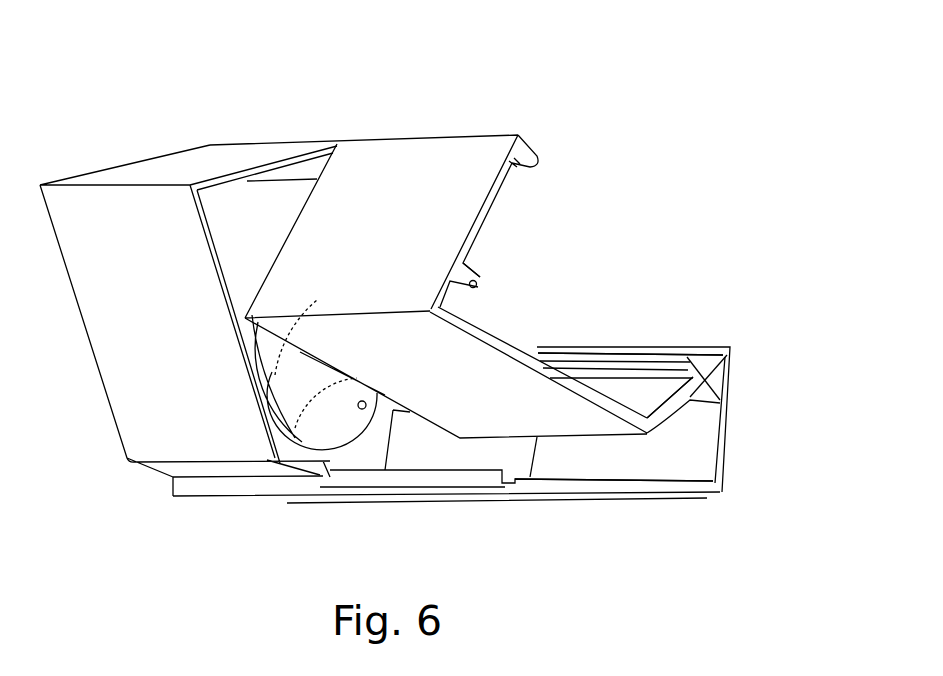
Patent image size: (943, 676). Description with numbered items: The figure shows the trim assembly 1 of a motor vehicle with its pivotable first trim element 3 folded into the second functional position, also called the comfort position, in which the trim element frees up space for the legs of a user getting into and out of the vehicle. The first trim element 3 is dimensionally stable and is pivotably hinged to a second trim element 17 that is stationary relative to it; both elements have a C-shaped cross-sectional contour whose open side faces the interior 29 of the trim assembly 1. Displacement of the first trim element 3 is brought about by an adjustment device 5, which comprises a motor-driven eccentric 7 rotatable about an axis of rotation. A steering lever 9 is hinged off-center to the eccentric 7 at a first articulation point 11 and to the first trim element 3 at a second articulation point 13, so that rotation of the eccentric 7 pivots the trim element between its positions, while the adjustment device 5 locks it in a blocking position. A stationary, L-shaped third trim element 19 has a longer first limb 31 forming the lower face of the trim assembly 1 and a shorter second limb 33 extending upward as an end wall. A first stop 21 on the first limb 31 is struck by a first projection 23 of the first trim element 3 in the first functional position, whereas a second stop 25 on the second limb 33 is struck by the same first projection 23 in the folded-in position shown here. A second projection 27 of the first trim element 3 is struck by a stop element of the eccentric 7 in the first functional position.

The trim assembly 1 is at (522, 125).
The first trim element 3 is at (488, 220).
The adjustment device 5 is at (537, 161).
The eccentric 7 is at (273, 370).
The steering lever 9 is at (357, 380).
The first articulation point 11 is at (373, 412).
The second articulation point 13 is at (480, 280).
The second trim element 17 is at (247, 172).
The third trim element 19 is at (728, 335).
The first stop 21 is at (523, 485).
The first projection 23 is at (683, 403).
The second stop 25 is at (710, 400).
The second projection 27 is at (690, 347).
The interior 29 is at (643, 265).
The first limb 31 is at (658, 490).
The second limb 33 is at (720, 378).